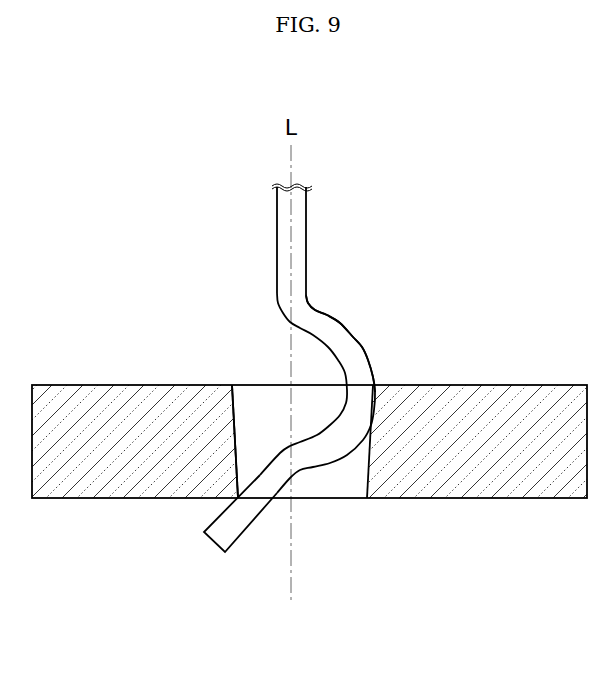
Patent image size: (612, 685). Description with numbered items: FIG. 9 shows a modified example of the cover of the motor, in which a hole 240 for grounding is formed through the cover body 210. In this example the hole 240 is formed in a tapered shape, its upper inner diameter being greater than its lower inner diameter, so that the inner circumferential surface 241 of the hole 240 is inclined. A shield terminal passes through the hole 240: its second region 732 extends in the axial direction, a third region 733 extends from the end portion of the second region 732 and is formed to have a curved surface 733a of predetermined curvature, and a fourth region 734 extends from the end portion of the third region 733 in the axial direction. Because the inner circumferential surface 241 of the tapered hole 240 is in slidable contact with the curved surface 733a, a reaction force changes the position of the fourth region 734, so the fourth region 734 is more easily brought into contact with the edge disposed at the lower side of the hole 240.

The cover body 210 is at (520, 452).
The hole 240 is at (276, 398).
The inner circumferential surface 241 is at (232, 434).
The second region 732 is at (302, 218).
The third region 733 is at (349, 343).
The curved surface 733a is at (372, 348).
The fourth region 734 is at (255, 518).